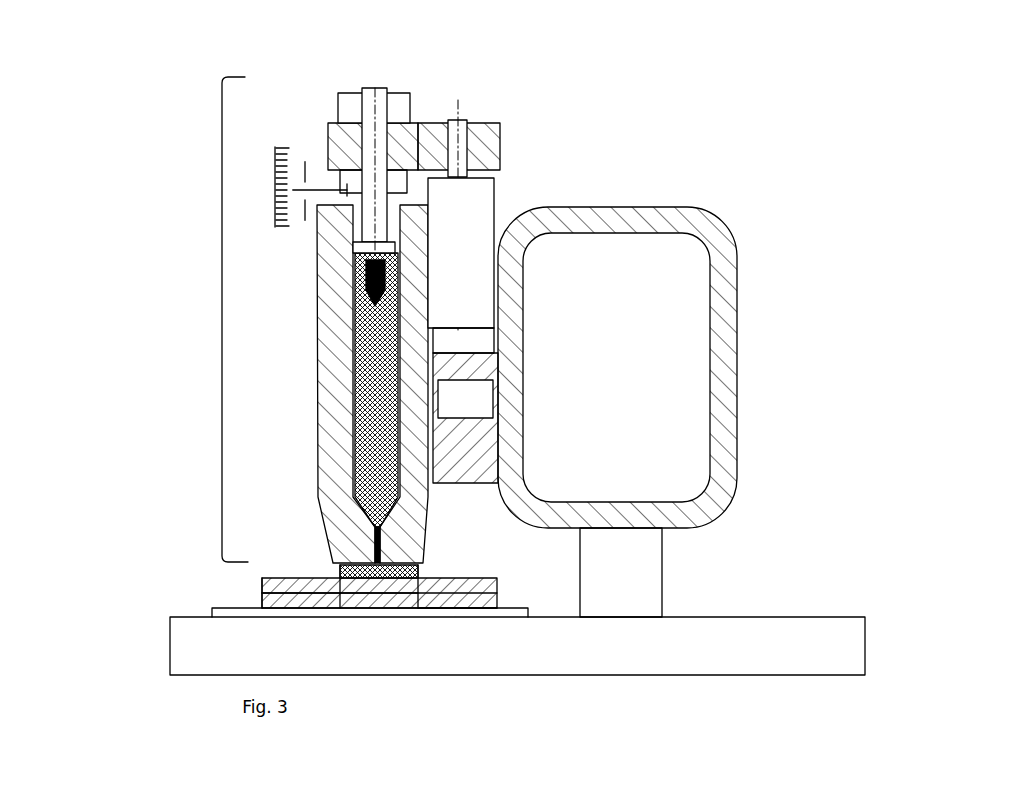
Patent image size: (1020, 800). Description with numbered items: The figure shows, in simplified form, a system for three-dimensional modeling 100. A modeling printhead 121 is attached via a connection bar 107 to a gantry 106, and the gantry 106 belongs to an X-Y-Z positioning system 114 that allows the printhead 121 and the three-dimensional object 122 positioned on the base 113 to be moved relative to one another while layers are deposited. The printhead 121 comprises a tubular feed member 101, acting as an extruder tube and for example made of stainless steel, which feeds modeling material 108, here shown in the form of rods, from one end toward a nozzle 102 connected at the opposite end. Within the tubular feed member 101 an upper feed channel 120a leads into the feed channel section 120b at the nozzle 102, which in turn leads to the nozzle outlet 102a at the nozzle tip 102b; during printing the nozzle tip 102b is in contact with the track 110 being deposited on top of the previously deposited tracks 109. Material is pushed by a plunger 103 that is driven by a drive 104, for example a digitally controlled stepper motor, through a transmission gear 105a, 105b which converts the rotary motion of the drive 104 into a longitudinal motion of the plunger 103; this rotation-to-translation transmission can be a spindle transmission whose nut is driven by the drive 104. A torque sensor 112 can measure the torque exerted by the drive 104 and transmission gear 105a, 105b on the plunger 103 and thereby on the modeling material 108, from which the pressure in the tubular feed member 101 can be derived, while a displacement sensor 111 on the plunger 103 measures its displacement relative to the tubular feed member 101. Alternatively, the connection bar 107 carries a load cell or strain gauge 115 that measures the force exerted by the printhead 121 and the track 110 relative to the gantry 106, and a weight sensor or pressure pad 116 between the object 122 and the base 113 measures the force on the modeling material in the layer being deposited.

The system for three-dimensional modeling 100 is at (202, 88).
The tubular feed member 101 is at (314, 423).
The nozzle 102 is at (428, 555).
The nozzle outlet 102a is at (363, 559).
The nozzle tip 102b is at (263, 584).
The plunger 103 is at (373, 85).
The drive 104 is at (473, 230).
The transmission gear 105a is at (488, 125).
The transmission gear 105b is at (410, 135).
The gantry 106 is at (713, 227).
The connection bar 107 is at (477, 487).
The modeling material 108 is at (357, 381).
The previously deposited tracks 109 is at (440, 612).
The track being deposited 110 is at (353, 592).
The displacement sensor 111 is at (393, 178).
The torque sensor 112 is at (384, 98).
The base 113 is at (592, 676).
The X-Y-Z positioning system 114 is at (663, 567).
The load cell or strain gauge 115 is at (496, 397).
The pressure pad 116 is at (215, 622).
The upper feed channel 120a is at (348, 304).
The feed channel section at the nozzle 120b is at (365, 535).
The modeling printhead 121 is at (222, 343).
The three-dimensional object 122 is at (263, 577).